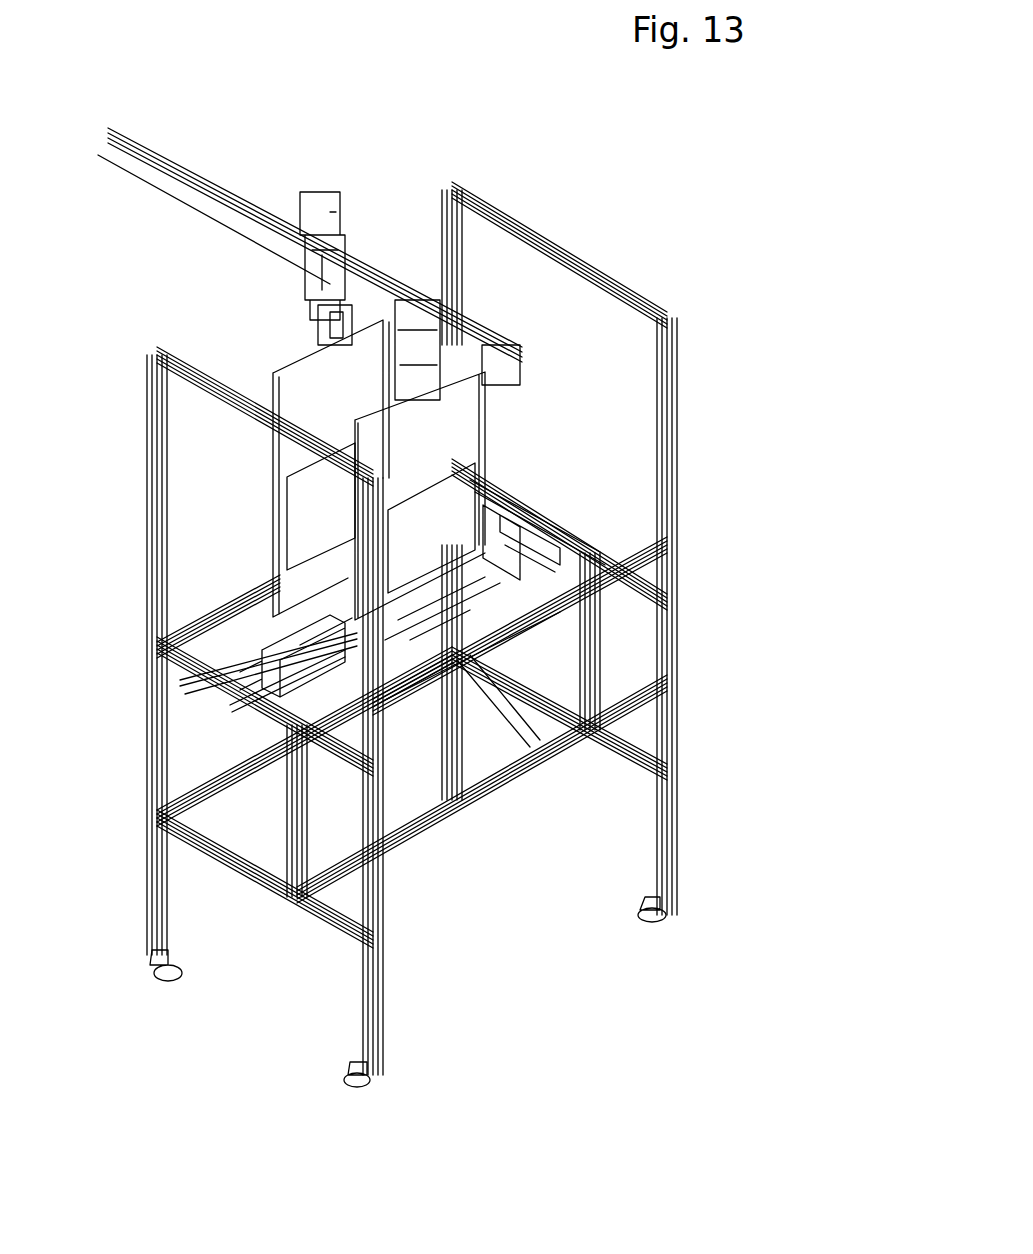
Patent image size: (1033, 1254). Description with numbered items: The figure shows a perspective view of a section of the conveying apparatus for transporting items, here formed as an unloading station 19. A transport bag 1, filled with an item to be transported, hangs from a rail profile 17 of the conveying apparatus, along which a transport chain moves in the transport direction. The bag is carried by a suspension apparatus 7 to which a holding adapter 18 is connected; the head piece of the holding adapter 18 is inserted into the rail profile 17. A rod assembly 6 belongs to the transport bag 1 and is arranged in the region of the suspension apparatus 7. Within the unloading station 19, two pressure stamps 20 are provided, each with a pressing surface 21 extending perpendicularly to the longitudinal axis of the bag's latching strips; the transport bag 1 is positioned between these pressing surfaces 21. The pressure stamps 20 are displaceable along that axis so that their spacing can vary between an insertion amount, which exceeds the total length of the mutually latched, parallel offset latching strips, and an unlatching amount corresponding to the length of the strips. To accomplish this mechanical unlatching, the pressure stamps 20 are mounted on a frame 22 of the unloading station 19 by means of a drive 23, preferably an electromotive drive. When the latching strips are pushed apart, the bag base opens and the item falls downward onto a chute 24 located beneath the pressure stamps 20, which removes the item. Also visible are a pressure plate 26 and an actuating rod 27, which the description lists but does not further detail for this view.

The transport bag 1 is at (380, 446).
The rod assembly 6 is at (323, 330).
The suspension apparatus 7 is at (300, 343).
The rail profile 17 is at (204, 199).
The holding adapter 18 is at (303, 290).
The unloading station 19 is at (693, 543).
The pressure stamp 20 is at (498, 510).
The pressing surface 21 is at (543, 520).
The frame 22 is at (140, 570).
The drive 23 is at (523, 510).
The chute 24 is at (330, 690).
The pressure plate 26 is at (463, 817).
The actuating rod 27 is at (530, 750).